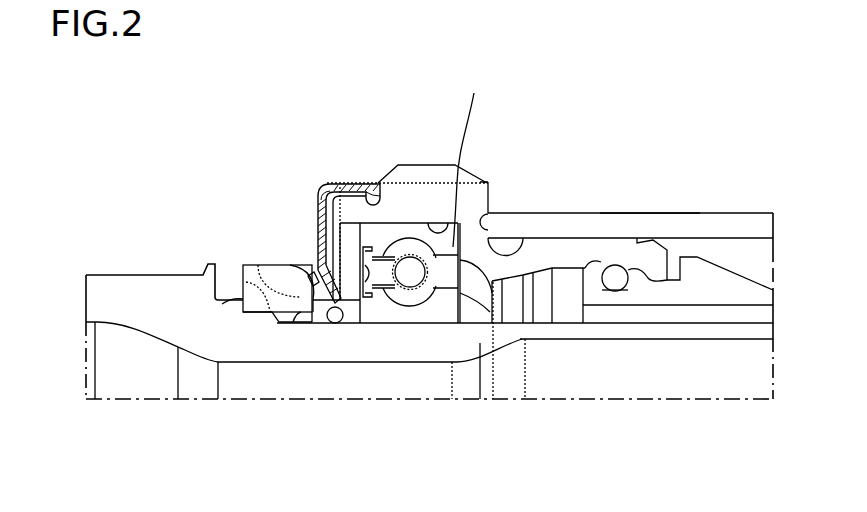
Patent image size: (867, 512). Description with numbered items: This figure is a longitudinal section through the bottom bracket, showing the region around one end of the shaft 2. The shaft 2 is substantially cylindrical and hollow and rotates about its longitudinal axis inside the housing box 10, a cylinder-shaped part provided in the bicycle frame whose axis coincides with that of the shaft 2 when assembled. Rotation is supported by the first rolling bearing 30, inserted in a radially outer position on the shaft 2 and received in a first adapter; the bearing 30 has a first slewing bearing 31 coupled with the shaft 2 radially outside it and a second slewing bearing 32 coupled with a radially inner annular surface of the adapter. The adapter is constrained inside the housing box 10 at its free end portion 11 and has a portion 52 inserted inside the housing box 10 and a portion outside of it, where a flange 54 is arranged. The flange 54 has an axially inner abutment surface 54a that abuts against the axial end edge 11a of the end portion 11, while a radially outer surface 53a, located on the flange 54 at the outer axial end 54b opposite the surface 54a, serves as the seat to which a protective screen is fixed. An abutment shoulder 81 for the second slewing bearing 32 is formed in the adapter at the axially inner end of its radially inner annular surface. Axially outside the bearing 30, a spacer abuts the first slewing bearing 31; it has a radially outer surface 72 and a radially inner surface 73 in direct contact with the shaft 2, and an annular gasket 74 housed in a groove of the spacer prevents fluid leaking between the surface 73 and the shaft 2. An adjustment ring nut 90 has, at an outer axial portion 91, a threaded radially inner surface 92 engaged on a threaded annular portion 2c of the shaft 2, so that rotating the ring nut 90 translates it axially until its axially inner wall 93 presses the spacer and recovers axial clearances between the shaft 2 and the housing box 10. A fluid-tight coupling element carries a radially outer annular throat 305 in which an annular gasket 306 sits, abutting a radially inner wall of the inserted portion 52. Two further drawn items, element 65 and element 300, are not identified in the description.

The shaft 2 is at (112, 283).
The threaded annular portion 2c is at (253, 312).
The housing box 10 is at (718, 212).
The free end portion 11 is at (590, 225).
The axial end edge 11a is at (517, 227).
The first rolling bearing 30 is at (405, 183).
The first slewing bearing 31 is at (422, 312).
The second slewing bearing 32 is at (455, 250).
The portion inserted inside the housing box 52 is at (638, 240).
The radially outer surface 53a is at (379, 183).
The flange 54 is at (407, 202).
The axially inner abutment surface 54a is at (488, 210).
The outer axial end 54b is at (334, 194).
The seal lip 65 is at (343, 184).
The radially outer surface 72 is at (397, 300).
The radially inner surface 73 is at (368, 298).
The annular gasket 74 is at (335, 324).
The abutment shoulder 81 is at (490, 292).
The adjustment ring nut 90 is at (282, 316).
The outer axial portion 91 is at (222, 304).
The threaded radially inner surface 92 is at (267, 300).
The axially inner wall 93 is at (311, 290).
The shaft end 300 is at (706, 302).
The radially outer annular throat 305 is at (623, 292).
The annular gasket 306 is at (613, 279).